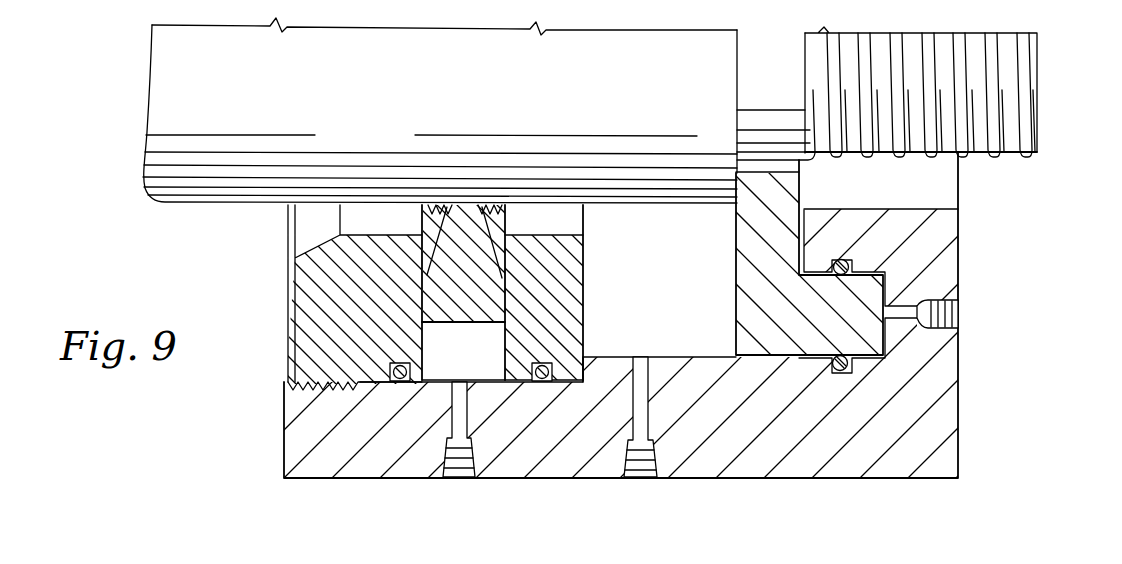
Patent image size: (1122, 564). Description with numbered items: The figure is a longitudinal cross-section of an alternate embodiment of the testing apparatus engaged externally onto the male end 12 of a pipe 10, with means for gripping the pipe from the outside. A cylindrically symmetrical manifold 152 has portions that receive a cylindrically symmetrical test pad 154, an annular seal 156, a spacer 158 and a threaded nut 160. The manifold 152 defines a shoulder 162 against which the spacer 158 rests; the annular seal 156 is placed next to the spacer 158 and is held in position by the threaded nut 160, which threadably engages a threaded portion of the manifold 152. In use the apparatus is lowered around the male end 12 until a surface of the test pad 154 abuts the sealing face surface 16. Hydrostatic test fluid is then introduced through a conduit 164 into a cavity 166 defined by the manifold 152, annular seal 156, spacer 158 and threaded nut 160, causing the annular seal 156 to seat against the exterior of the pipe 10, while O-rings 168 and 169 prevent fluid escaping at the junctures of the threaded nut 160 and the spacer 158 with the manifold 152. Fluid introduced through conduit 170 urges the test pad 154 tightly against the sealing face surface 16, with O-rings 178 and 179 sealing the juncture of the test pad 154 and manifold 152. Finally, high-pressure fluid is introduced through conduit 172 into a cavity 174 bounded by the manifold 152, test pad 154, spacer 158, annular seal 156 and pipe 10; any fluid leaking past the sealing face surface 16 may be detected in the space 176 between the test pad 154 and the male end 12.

The pipe 10 is at (160, 93).
The male end 12 is at (1010, 82).
The sealing face surface 16 is at (738, 77).
The manifold 152 is at (922, 444).
The test pad 154 is at (857, 293).
The annular seal 156 is at (453, 276).
The spacer 158 is at (570, 287).
The threaded nut 160 is at (288, 276).
The shoulder 162 is at (572, 374).
The conduit 164 is at (460, 418).
The cavity 166 is at (477, 360).
The O-ring 168 is at (402, 378).
The O-ring 169 is at (543, 372).
The conduit 170 is at (943, 315).
The conduit 172 is at (639, 365).
The cavity 174 is at (677, 260).
The space 176 is at (787, 166).
The O-ring 178 is at (839, 371).
The O-ring 179 is at (841, 259).